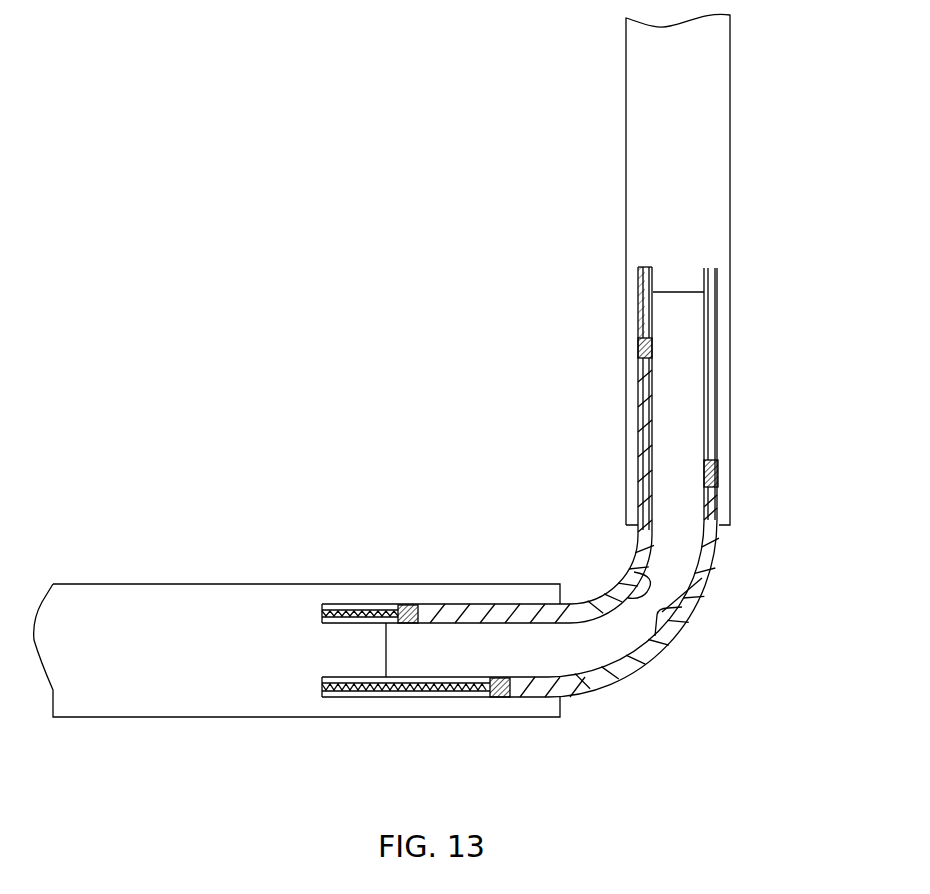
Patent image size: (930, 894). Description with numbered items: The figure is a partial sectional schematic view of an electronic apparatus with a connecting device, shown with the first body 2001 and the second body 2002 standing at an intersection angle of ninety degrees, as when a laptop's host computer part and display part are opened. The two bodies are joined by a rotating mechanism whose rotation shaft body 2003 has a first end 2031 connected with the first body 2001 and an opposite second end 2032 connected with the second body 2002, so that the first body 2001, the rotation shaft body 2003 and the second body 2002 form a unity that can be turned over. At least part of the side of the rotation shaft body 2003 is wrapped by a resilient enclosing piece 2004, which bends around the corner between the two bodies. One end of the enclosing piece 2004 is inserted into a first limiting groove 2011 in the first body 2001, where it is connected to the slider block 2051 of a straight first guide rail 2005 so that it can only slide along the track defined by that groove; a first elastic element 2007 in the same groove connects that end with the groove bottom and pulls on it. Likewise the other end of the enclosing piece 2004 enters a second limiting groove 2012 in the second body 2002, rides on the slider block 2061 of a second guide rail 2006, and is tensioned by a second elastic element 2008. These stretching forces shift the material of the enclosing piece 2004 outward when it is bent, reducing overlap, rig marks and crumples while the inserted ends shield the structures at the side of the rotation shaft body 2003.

The first body 2001 is at (158, 600).
The second body 2002 is at (655, 92).
The rotation shaft body 2003 is at (685, 587).
The enclosing piece 2004 is at (602, 678).
The first guide rail 2005 is at (368, 612).
The second guide rail 2006 is at (638, 327).
The first elastic element 2007 is at (323, 607).
The second elastic element 2008 is at (640, 267).
The first limiting groove 2011 is at (357, 602).
The second limiting groove 2012 is at (640, 282).
The first end 2031 is at (407, 655).
The second end 2032 is at (678, 320).
The slider block 2051 is at (402, 615).
The slider block 2061 is at (638, 355).